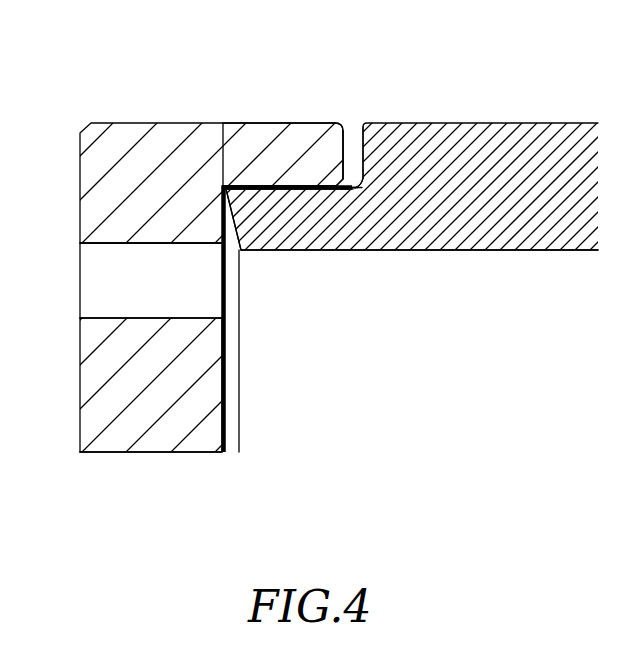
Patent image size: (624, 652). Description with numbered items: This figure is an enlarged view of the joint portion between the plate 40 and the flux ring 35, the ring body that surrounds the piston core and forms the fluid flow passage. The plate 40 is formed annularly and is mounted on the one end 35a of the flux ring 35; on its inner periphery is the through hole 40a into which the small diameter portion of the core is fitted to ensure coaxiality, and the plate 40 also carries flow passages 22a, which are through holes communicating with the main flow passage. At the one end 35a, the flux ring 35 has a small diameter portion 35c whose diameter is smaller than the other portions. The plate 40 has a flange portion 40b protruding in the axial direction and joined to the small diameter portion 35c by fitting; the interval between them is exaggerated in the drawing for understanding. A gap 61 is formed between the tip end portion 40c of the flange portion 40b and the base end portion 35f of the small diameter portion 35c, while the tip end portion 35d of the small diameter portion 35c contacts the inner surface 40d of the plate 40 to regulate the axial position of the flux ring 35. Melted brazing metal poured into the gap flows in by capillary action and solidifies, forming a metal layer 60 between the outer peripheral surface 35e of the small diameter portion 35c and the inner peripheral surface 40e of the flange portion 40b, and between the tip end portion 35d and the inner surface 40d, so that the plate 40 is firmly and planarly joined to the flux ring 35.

The flow passage 22a is at (88, 284).
The flux ring 35 is at (557, 122).
The one end 35a is at (261, 251).
The small diameter portion 35c is at (358, 188).
The tip end portion 35d is at (225, 216).
The outer peripheral surface 35e is at (263, 185).
The base end portion 35f is at (358, 152).
The plate 40 is at (91, 122).
The through hole 40a is at (154, 453).
The flange portion 40b is at (283, 157).
The tip end portion 40c is at (351, 137).
The inner surface 40d is at (228, 359).
The inner peripheral surface 40e is at (303, 192).
The metal layer 60 is at (223, 185).
The gap 61 is at (352, 164).